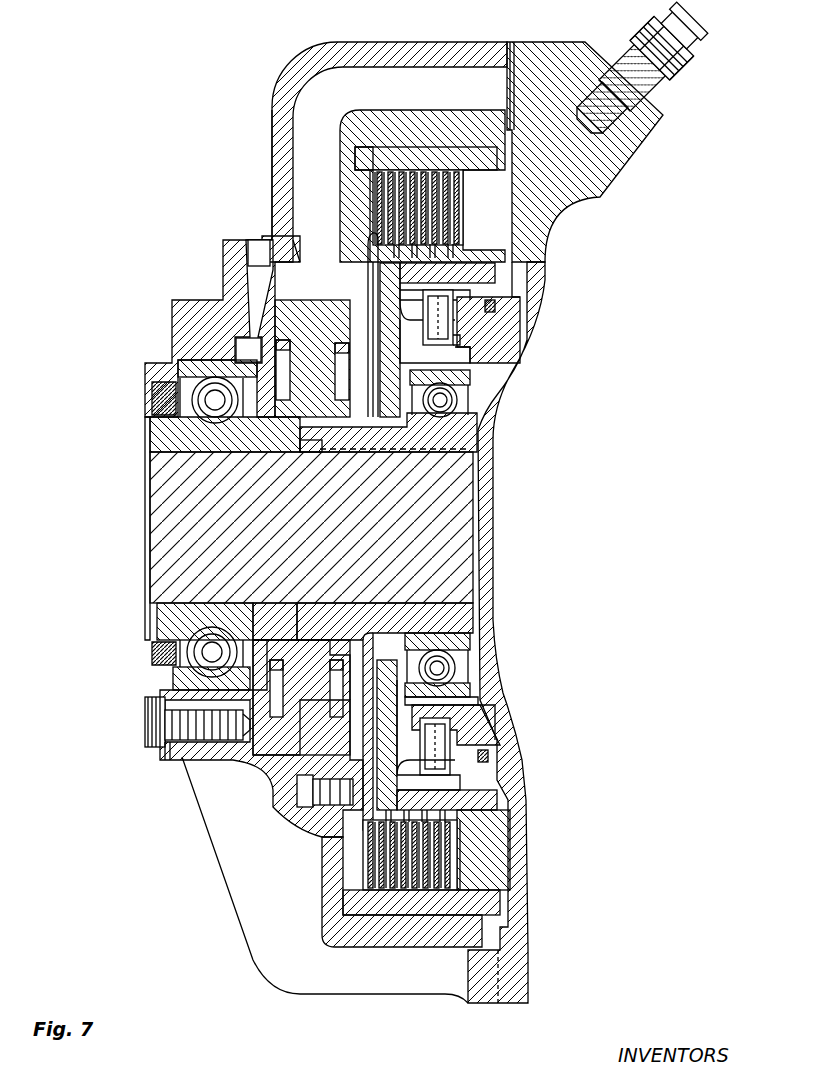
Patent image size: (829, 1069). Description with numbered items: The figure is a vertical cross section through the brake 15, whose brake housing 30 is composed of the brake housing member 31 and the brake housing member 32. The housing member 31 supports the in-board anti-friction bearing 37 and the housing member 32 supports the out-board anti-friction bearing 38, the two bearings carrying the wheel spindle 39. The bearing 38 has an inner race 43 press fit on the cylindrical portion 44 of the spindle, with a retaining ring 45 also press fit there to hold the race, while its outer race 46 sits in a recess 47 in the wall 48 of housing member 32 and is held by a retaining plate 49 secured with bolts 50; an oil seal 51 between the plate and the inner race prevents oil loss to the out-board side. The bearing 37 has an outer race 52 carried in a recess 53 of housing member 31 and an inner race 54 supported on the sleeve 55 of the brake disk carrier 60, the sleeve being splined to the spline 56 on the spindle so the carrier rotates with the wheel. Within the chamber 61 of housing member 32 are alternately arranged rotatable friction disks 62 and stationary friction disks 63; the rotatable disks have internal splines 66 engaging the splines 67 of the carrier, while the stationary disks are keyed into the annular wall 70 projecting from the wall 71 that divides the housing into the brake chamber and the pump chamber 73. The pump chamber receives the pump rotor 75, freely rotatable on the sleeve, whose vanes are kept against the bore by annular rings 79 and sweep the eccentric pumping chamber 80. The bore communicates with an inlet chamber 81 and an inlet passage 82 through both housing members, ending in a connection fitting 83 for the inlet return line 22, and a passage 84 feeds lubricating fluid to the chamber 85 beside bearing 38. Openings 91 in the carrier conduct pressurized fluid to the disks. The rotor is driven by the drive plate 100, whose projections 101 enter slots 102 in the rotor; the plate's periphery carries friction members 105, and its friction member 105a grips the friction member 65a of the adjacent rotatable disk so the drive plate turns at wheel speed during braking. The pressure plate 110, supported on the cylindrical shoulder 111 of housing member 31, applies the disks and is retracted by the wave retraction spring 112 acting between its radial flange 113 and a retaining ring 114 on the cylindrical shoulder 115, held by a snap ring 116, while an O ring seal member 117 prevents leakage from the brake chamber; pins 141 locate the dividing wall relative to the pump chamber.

The brake 15 is at (392, 997).
The inlet return line 22 is at (674, 33).
The brake housing 30 is at (292, 78).
The brake housing member 31 is at (520, 982).
The brake housing member 32 is at (274, 130).
The anti-friction bearing 37 is at (462, 646).
The anti-friction bearing 38 is at (150, 628).
The wheel spindle 39 is at (165, 520).
The inner race 43 is at (160, 430).
The cylindrical portion 44 is at (168, 447).
The retaining ring 45 is at (288, 605).
The outer race 46 is at (175, 676).
The recess 47 is at (195, 704).
The wall 48 is at (218, 768).
The retaining plate 49 is at (168, 762).
The bolts 50 is at (143, 728).
The oil seal 51 is at (160, 400).
The outer race 52 is at (470, 692).
The recess 53 is at (486, 698).
The inner race 54 is at (462, 426).
The sleeve 55 is at (423, 434).
The spline 56 is at (313, 455).
The brake disk carrier 60 is at (520, 278).
The chamber 61 is at (392, 922).
The rotatable friction disks 62 is at (396, 175).
The stationary friction disks 63 is at (428, 178).
The friction member 65a is at (365, 900).
The internal splines 66 is at (496, 260).
The splines 67 is at (497, 800).
The annular wall 70 is at (478, 150).
The wall 71 is at (368, 268).
The pump chamber 73 is at (279, 240).
The pump rotor 75 is at (270, 778).
The annular rings 79 is at (283, 340).
The pumping chamber 80 is at (306, 300).
The inlet chamber 81 is at (297, 238).
The inlet passage 82 is at (383, 72).
The connection fitting 83 is at (675, 96).
The passage 84 is at (257, 292).
The chamber 85 is at (244, 346).
The openings 91 is at (483, 855).
The drive plate 100 is at (368, 250).
The projections 101 is at (348, 625).
The slots 102 is at (333, 640).
The friction members 105 is at (376, 181).
The friction member 105a is at (370, 858).
The pressure plate 110 is at (524, 242).
The cylindrical shoulder 111 is at (520, 775).
The retraction spring 112 is at (448, 326).
The radial flange 113 is at (458, 341).
The retaining ring 114 is at (450, 730).
The cylindrical shoulder 115 is at (500, 716).
The snap ring 116 is at (410, 715).
The O ring seal member 117 is at (495, 754).
The pins 141 is at (330, 810).